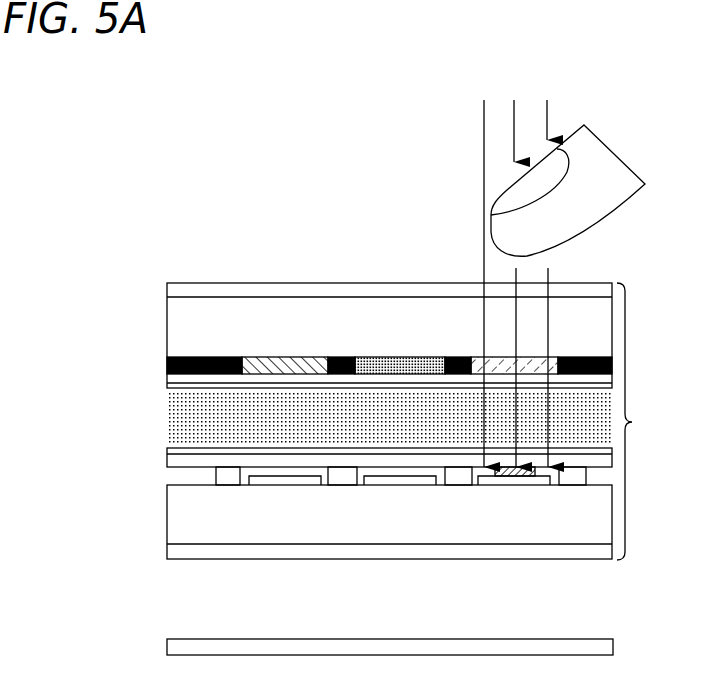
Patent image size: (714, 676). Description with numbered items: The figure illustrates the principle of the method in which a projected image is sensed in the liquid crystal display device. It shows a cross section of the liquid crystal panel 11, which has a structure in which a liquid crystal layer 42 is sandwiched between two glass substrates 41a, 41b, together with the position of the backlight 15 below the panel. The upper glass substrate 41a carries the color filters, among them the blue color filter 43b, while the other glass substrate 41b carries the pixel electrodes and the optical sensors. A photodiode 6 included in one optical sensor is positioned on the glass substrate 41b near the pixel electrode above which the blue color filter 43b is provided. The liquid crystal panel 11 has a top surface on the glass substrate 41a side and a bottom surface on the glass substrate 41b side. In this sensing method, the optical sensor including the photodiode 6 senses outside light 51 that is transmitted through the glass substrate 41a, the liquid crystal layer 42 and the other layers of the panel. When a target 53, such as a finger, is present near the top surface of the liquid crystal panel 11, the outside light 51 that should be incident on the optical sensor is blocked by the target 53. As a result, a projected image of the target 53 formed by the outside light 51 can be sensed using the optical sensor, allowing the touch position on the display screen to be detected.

The glass substrate 41a is at (167, 325).
The blue color filter 43b is at (472, 357).
The liquid crystal layer 42 is at (167, 420).
The photodiode 6 is at (496, 478).
The glass substrate 41b is at (167, 527).
The liquid crystal panel 11 is at (637, 421).
The backlight 15 is at (614, 648).
The outside light 51 is at (483, 131).
The target 53 is at (628, 205).